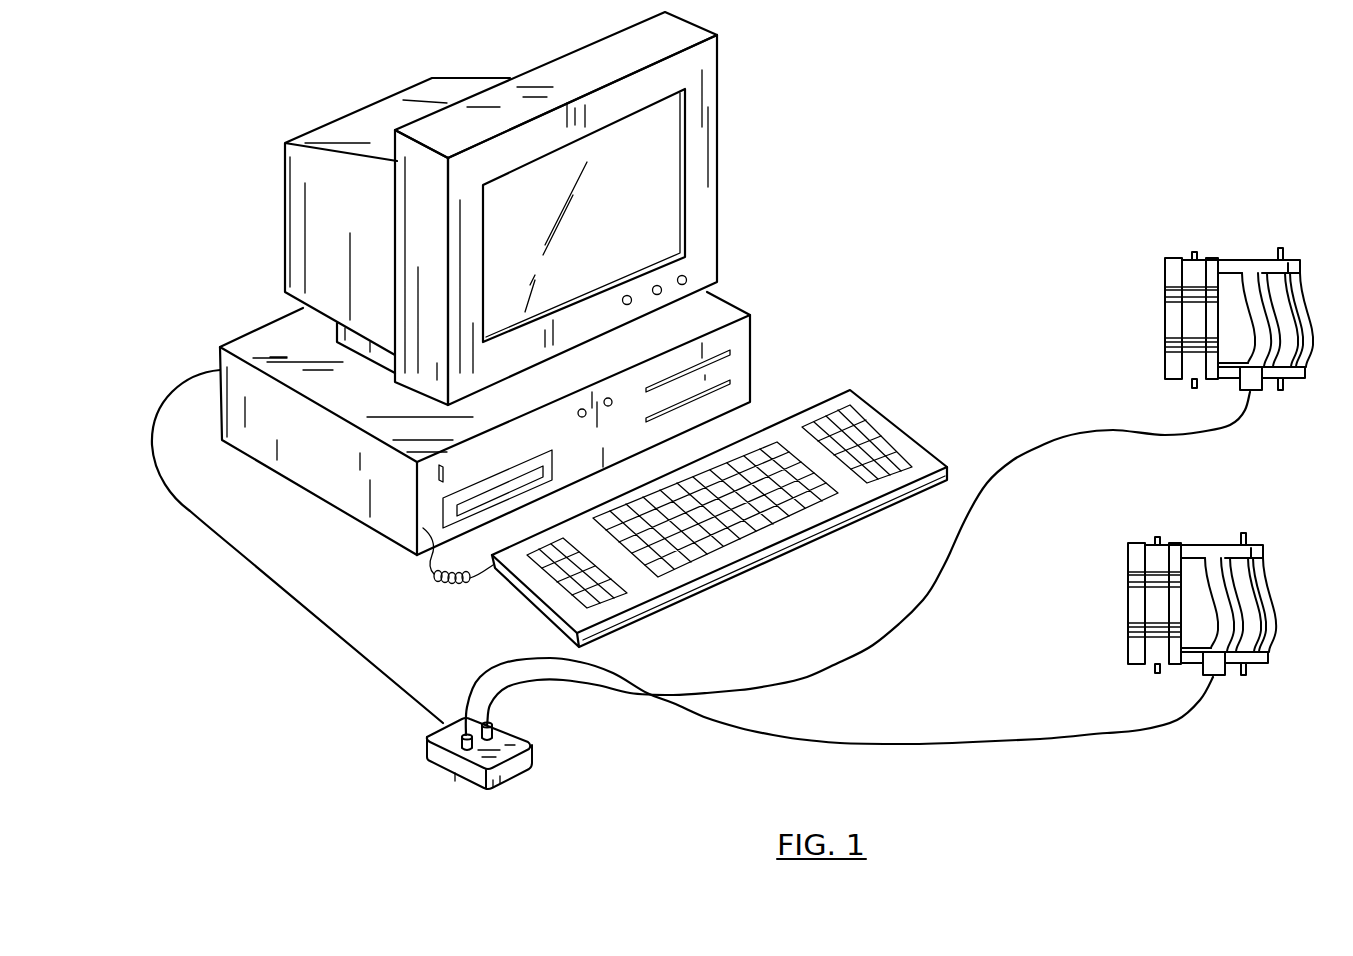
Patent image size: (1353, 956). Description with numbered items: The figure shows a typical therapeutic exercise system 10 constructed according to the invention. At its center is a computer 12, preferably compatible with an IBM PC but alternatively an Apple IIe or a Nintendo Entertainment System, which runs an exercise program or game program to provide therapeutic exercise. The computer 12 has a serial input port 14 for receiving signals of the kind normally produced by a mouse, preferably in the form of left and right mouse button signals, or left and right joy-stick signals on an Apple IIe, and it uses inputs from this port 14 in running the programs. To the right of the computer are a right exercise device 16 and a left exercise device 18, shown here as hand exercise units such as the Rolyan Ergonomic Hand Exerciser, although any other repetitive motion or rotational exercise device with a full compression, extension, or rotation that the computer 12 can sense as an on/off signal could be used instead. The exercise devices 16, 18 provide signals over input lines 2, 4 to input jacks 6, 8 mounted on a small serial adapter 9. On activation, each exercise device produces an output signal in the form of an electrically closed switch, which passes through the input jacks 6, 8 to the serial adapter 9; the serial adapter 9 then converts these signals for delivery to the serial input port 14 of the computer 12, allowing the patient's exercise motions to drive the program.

The therapeutic exercise system 10 is at (899, 172).
The computer 12 is at (718, 147).
The serial input port 14 is at (220, 370).
The right exercise device 16 is at (1218, 260).
The left exercise device 18 is at (1203, 543).
The input line 2 is at (1124, 437).
The input line 4 is at (1080, 739).
The input jack 6 is at (492, 722).
The input jack 8 is at (458, 745).
The serial adapter 9 is at (520, 775).